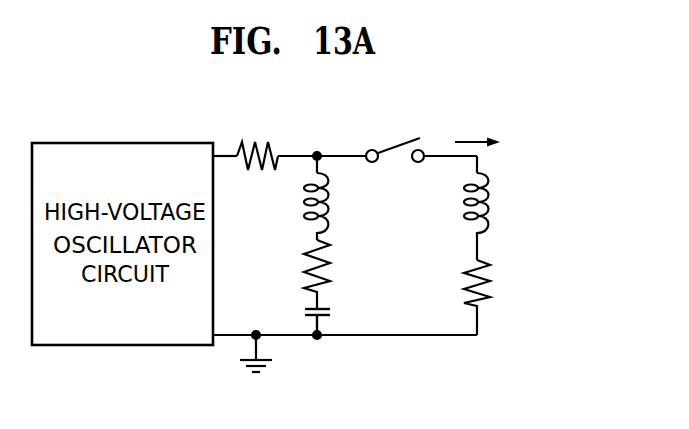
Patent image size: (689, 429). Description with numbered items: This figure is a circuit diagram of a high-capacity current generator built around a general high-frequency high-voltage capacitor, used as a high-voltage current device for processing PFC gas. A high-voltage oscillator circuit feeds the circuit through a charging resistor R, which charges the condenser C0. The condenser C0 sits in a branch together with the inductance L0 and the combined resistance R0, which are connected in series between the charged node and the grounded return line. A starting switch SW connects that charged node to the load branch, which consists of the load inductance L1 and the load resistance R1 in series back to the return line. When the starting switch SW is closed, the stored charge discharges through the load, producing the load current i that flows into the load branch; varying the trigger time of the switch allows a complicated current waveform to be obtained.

The charging resistor R is at (257, 139).
The starting switch SW is at (395, 136).
The load current i is at (484, 138).
The inductance L0 is at (335, 206).
The combined resistance R0 is at (335, 274).
The condenser C0 is at (336, 317).
The load inductance L1 is at (495, 216).
The load resistance R1 is at (496, 283).